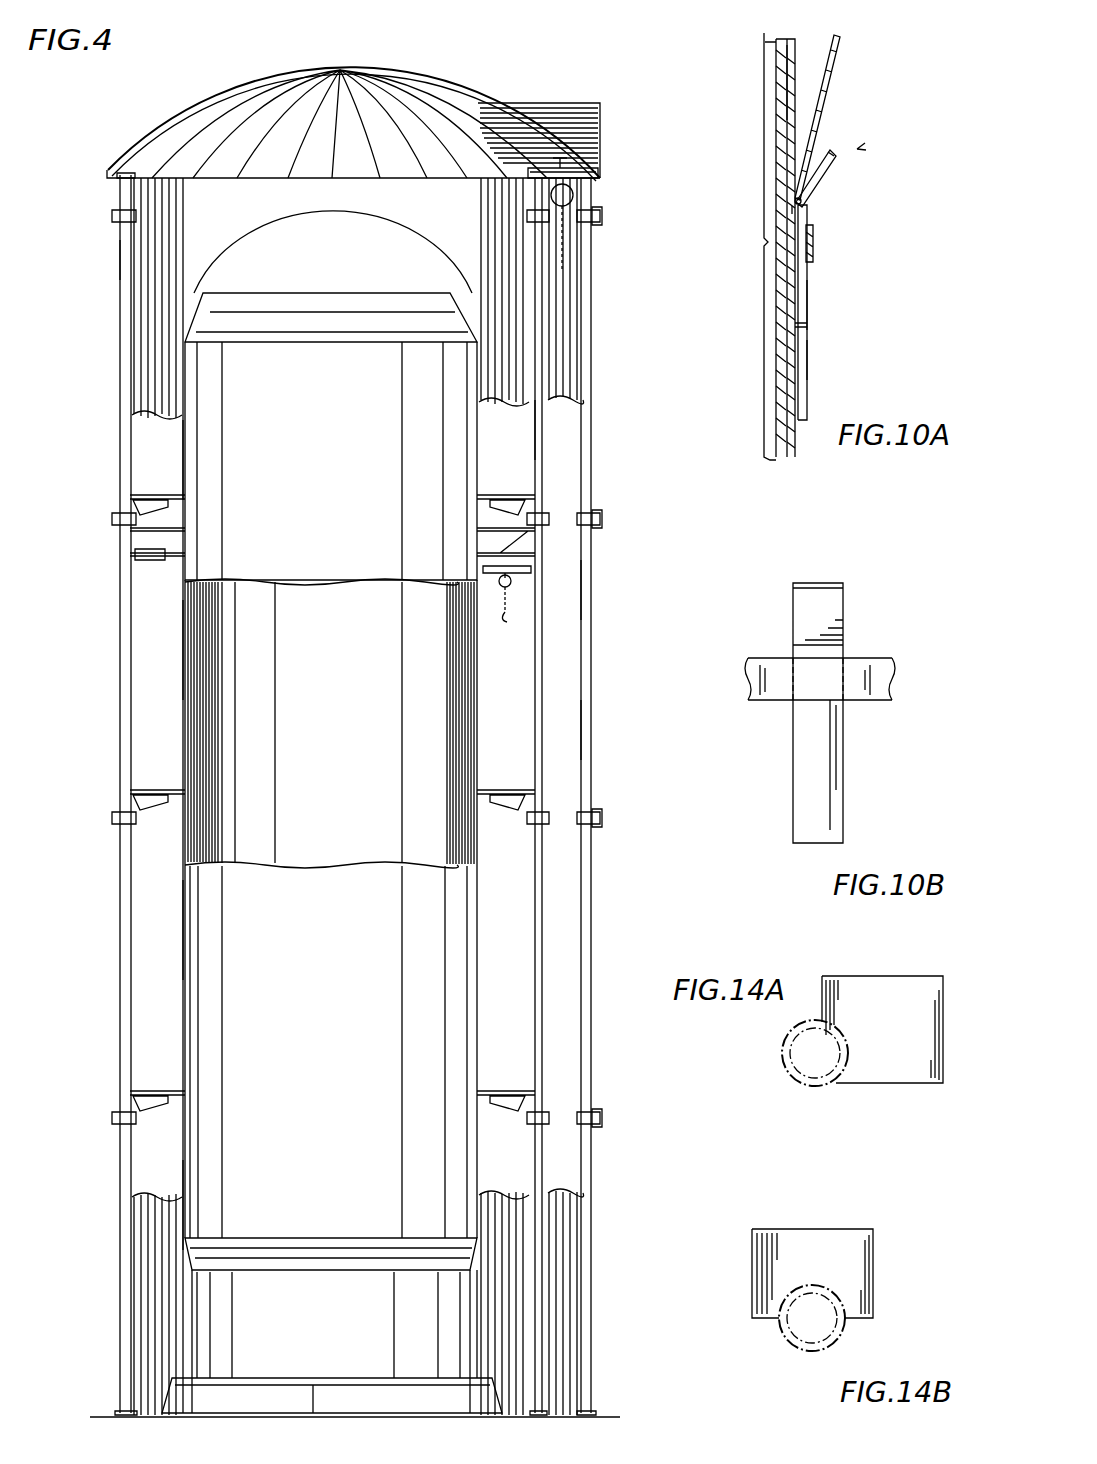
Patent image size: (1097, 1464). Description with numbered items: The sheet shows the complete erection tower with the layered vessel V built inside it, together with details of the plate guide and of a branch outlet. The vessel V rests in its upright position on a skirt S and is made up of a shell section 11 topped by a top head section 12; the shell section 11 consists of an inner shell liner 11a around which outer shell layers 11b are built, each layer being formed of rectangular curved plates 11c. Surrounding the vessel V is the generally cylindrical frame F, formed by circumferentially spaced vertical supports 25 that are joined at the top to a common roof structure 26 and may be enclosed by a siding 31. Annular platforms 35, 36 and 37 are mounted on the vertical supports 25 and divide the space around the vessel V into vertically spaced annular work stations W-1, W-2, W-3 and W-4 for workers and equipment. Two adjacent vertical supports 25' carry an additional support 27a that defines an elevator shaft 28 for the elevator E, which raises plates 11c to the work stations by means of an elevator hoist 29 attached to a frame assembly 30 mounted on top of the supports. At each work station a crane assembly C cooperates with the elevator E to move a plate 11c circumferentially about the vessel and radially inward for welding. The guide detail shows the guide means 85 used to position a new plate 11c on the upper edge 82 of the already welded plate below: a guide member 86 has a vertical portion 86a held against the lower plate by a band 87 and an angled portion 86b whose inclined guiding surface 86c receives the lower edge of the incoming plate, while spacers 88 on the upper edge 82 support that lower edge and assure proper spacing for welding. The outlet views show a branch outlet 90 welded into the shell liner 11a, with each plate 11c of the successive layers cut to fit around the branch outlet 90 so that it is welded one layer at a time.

In FIG. 4, the roof structure 26 is at (216, 92).
In FIG. 4, the frame assembly 30 is at (577, 167).
In FIG. 4, the elevator hoist 29 is at (573, 196).
In FIG. 4, the frame F is at (121, 260).
In FIG. 4, the siding 31 is at (152, 310).
In FIG. 4, the additional support 27a is at (585, 330).
In FIG. 4, the annular work station W-4 is at (145, 440).
In FIG. 4, the vertical support 25' is at (592, 423).
In FIG. 4, the platform 37 is at (146, 496).
In FIG. 4, the crane assembly C is at (547, 536).
In FIG. 4, the elevator E is at (575, 590).
In FIG. 4, the annular work station W-3 is at (148, 625).
In FIG. 4, the vertical support 25 is at (99, 794).
In FIG. 4, the shell section 11 is at (337, 960).
In FIG. 10A, the shell section 11 is at (776, 62).
In FIG. 4, the elevator shaft 28 is at (567, 731).
In FIG. 4, the platform 36 is at (143, 790).
In FIG. 4, the annular work station W-2 is at (145, 898).
In FIG. 4, the platform 35 is at (142, 1090).
In FIG. 4, the annular work station W-1 is at (148, 1172).
In FIG. 4, the top head section 12 is at (316, 263).
In FIG. 4, the layered vessel V is at (325, 416).
In FIG. 4, the inner shell liner 11a is at (348, 685).
In FIG. 4, the skirt S is at (318, 1332).
In FIG. 10A, the outer shell layer 11b is at (791, 50).
In FIG. 10A, the rectangular plate 11c is at (840, 50).
In FIG. 14A, the rectangular plate 11c is at (877, 1073).
In FIG. 14B, the rectangular plate 11c is at (815, 1233).
In FIG. 10A, the inclined guiding surface 86c is at (820, 150).
In FIG. 10A, the guide means 85 is at (857, 149).
In FIG. 10A, the angled portion 86b is at (835, 165).
In FIG. 10B, the angled portion 86b is at (802, 598).
In FIG. 10A, the spacer 88 is at (804, 203).
In FIG. 10A, the upper edge 82 is at (792, 210).
In FIG. 10A, the band 87 is at (815, 246).
In FIG. 10B, the band 87 is at (768, 660).
In FIG. 10A, the guide member 86 is at (806, 316).
In FIG. 10A, the vertical portion 86a is at (808, 356).
In FIG. 10B, the vertical portion 86a is at (810, 760).
In FIG. 14A, the branch outlet 90 is at (790, 1078).
In FIG. 14B, the branch outlet 90 is at (812, 1318).